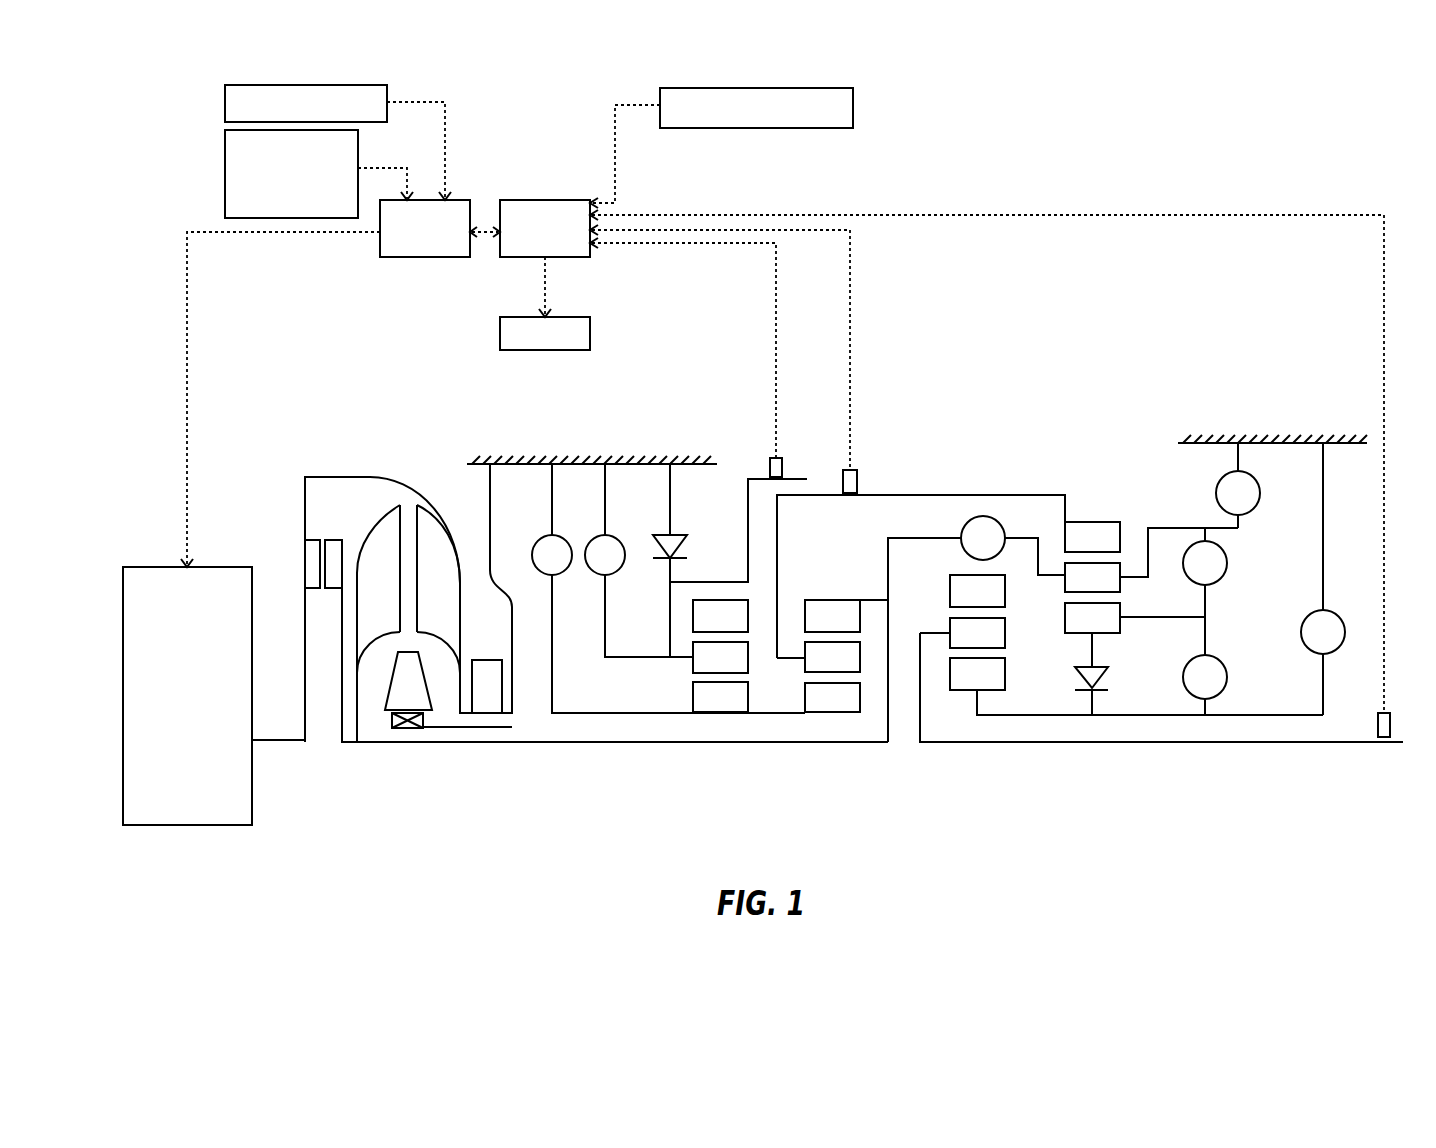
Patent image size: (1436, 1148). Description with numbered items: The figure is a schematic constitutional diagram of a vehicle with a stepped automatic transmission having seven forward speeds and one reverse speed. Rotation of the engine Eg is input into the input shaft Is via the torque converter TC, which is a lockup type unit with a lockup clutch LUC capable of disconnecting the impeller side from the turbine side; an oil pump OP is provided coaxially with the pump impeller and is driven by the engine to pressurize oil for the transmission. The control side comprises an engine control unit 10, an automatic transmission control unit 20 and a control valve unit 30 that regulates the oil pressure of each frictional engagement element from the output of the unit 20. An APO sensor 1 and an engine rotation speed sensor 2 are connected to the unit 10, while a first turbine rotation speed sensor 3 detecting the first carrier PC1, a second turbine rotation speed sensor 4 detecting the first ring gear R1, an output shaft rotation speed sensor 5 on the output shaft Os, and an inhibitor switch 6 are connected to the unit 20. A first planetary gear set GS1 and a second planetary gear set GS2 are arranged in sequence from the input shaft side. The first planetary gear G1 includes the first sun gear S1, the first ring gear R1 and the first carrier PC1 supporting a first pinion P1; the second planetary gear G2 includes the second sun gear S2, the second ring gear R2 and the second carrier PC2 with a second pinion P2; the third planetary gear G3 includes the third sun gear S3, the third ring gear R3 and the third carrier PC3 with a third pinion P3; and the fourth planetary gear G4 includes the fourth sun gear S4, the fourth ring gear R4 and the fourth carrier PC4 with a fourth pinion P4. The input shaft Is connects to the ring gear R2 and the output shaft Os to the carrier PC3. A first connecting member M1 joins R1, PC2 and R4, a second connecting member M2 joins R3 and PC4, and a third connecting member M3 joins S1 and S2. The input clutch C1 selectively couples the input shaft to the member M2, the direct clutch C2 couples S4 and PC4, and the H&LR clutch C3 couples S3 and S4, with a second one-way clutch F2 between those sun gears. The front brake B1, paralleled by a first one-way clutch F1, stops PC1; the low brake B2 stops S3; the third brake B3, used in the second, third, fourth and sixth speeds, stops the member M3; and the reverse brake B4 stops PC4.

The APO sensor 1 is at (225, 102).
The engine rotation speed sensor 2 is at (225, 177).
The first turbine rotation speed sensor 3 is at (770, 460).
The second turbine rotation speed sensor 4 is at (857, 480).
The output shaft rotation speed sensor 5 is at (1390, 725).
The inhibitor switch 6 is at (853, 108).
The engine control unit 10 is at (418, 257).
The automatic transmission control unit 20 is at (532, 200).
The control valve unit 30 is at (500, 337).
The engine Eg is at (227, 567).
The torque converter TC is at (371, 556).
The lockup clutch LUC is at (327, 526).
The oil pump OP is at (487, 660).
The input shaft Is is at (515, 743).
The output shaft Os is at (1228, 742).
The front brake B1 is at (639, 560).
The low brake B2 is at (1323, 579).
The 2346 brake B3 is at (668, 588).
The reverse brake B4 is at (1238, 485).
The input clutch C1 is at (976, 629).
The direct clutch C2 is at (1205, 591).
The H&LR clutch C3 is at (1205, 685).
The first one-way clutch F1 is at (688, 530).
The second one-way clutch F2 is at (1113, 672).
The first ring gear R1 is at (720, 616).
The first pinion P1 is at (720, 657).
The first sun gear S1 is at (720, 697).
The first carrier PC1 is at (680, 658).
The second ring gear R2 is at (846, 616).
The second pinion P2 is at (818, 657).
The second sun gear S2 is at (832, 697).
The second carrier PC2 is at (782, 658).
The third ring gear R3 is at (977, 591).
The third pinion P3 is at (977, 633).
The third sun gear S3 is at (1136, 686).
The third carrier PC3 is at (933, 632).
The fourth ring gear R4 is at (1092, 537).
The fourth pinion P4 is at (1151, 560).
The fourth sun gear S4 is at (1135, 635).
The fourth carrier PC4 is at (1135, 578).
The first connecting member M1 is at (970, 495).
The second connecting member M2 is at (1037, 577).
The third connecting member M3 is at (777, 713).
The first planetary gear G1 is at (687, 768).
The second planetary gear G2 is at (800, 768).
The third planetary gear G3 is at (1012, 768).
The fourth planetary gear G4 is at (1125, 768).
The first planetary gear set GS1 is at (688, 808).
The second planetary gear set GS2 is at (953, 808).